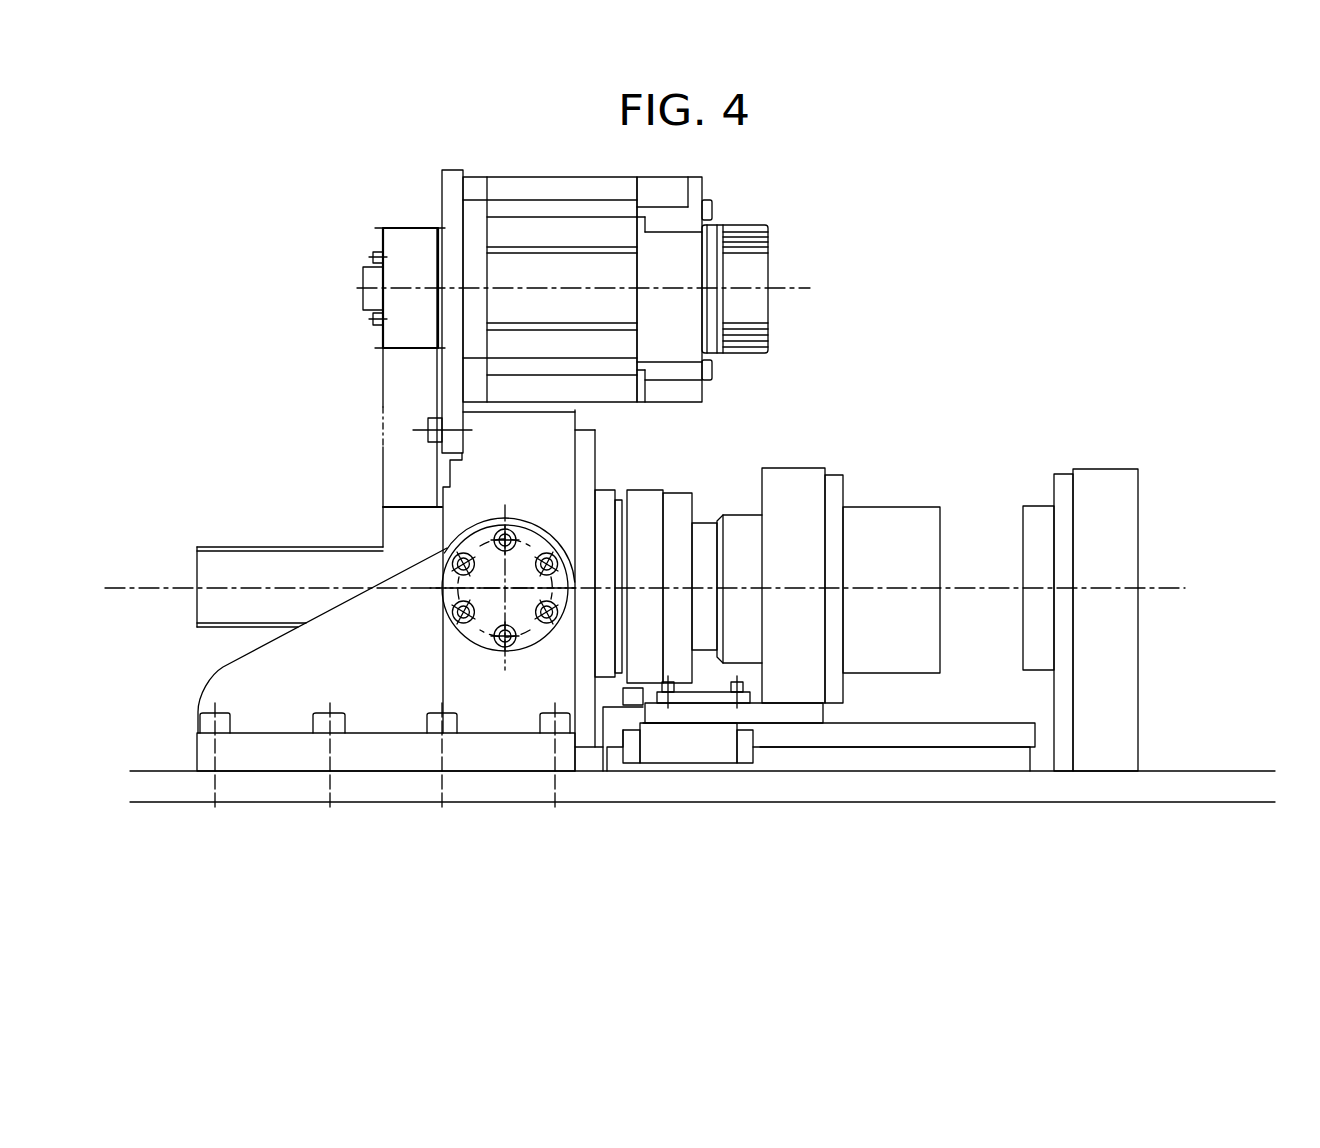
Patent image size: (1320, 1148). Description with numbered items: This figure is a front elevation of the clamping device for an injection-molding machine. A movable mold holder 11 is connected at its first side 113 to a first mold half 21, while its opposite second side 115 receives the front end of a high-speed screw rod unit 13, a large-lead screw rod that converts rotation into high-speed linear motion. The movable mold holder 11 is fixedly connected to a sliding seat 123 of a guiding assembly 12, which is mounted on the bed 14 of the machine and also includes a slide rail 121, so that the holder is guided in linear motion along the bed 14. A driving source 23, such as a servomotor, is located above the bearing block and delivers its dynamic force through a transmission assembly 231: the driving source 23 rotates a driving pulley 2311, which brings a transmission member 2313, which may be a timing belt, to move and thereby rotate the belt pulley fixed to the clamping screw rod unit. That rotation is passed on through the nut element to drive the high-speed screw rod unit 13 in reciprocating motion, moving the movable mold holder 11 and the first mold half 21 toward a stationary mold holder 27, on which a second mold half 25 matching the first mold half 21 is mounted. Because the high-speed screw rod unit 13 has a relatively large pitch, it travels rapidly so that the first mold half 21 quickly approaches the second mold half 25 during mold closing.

The movable mold holder 11 is at (762, 546).
The first side 113 is at (837, 488).
The second side 115 is at (762, 490).
The guiding assembly 12 is at (819, 798).
The slide rail 121 is at (788, 757).
The sliding seat 123 is at (688, 795).
The high-speed screw rod unit 13 is at (288, 563).
The bed 14 is at (942, 788).
The first mold half 21 is at (893, 533).
The driving source 23 is at (588, 178).
The transmission assembly 231 is at (316, 383).
The driving pulley 2311 is at (400, 250).
The transmission member 2313 is at (262, 220).
The second mold half 25 is at (1035, 518).
The stationary mold holder 27 is at (1108, 483).